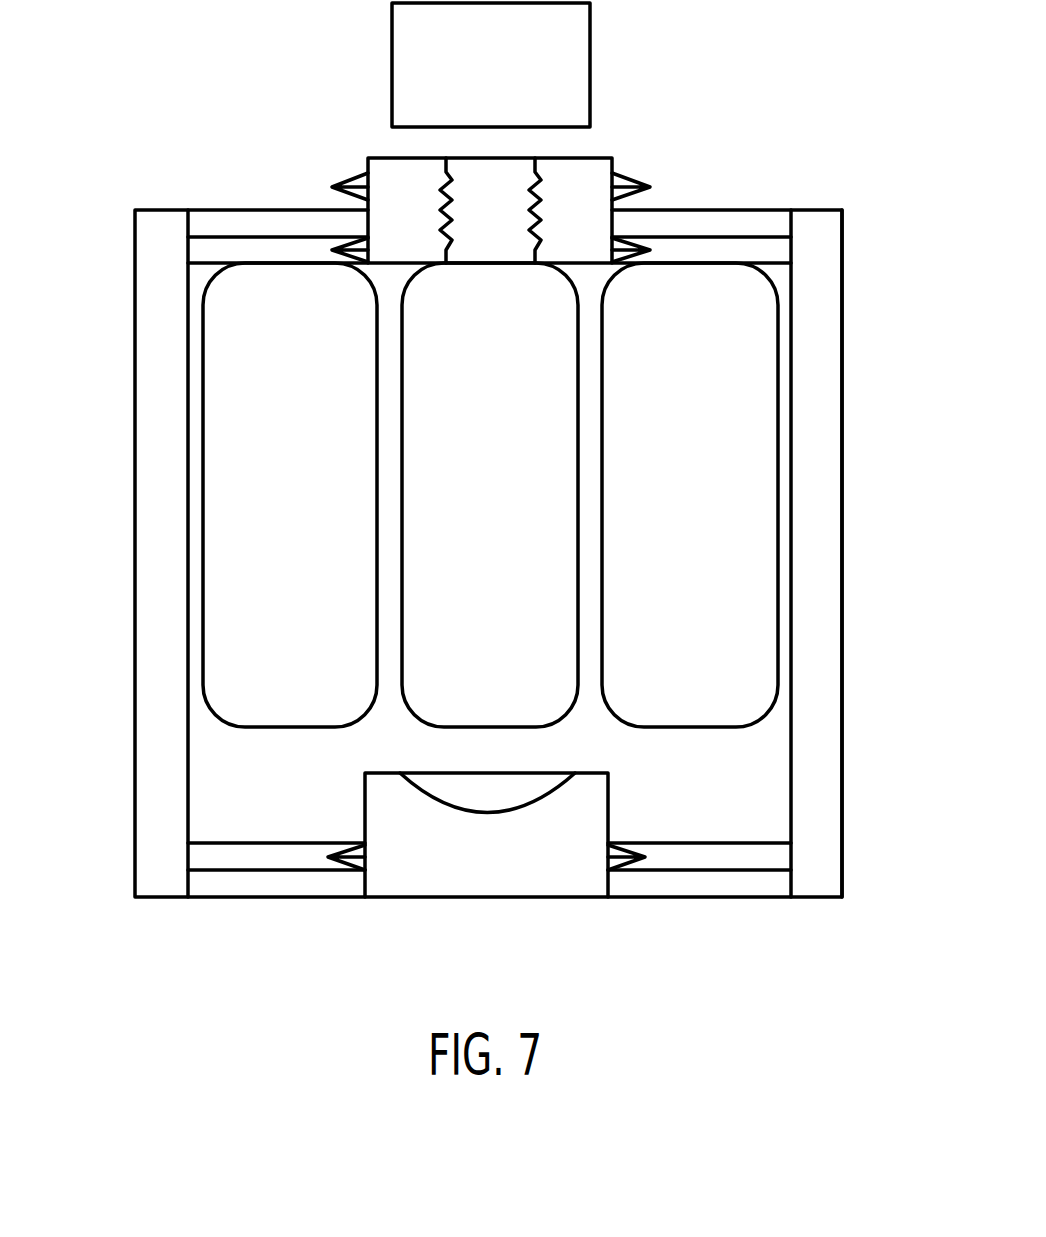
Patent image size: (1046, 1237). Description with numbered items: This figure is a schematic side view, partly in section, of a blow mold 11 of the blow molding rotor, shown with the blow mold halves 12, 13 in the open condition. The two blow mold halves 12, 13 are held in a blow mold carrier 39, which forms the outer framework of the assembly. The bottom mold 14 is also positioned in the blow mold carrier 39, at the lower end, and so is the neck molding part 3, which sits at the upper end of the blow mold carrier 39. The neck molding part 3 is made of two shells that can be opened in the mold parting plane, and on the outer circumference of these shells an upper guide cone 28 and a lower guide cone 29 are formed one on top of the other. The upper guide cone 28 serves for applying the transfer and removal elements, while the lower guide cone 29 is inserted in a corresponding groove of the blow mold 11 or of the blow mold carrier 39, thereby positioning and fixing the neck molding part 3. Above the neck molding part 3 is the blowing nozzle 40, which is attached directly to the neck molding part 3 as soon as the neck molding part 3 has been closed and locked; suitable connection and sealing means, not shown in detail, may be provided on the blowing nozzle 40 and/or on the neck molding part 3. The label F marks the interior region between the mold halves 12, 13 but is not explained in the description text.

The neck molding part 3 is at (386, 172).
The blow mold 11 is at (870, 332).
The blow mold half 12 is at (785, 398).
The blow mold half 13 is at (202, 350).
The bottom mold 14 is at (600, 792).
The upper guide cone 28 is at (338, 182).
The lower guide cone 29 is at (340, 264).
The blow mold carrier 39 is at (833, 695).
The blowing nozzle 40 is at (573, 43).
The field / force direction F is at (440, 708).